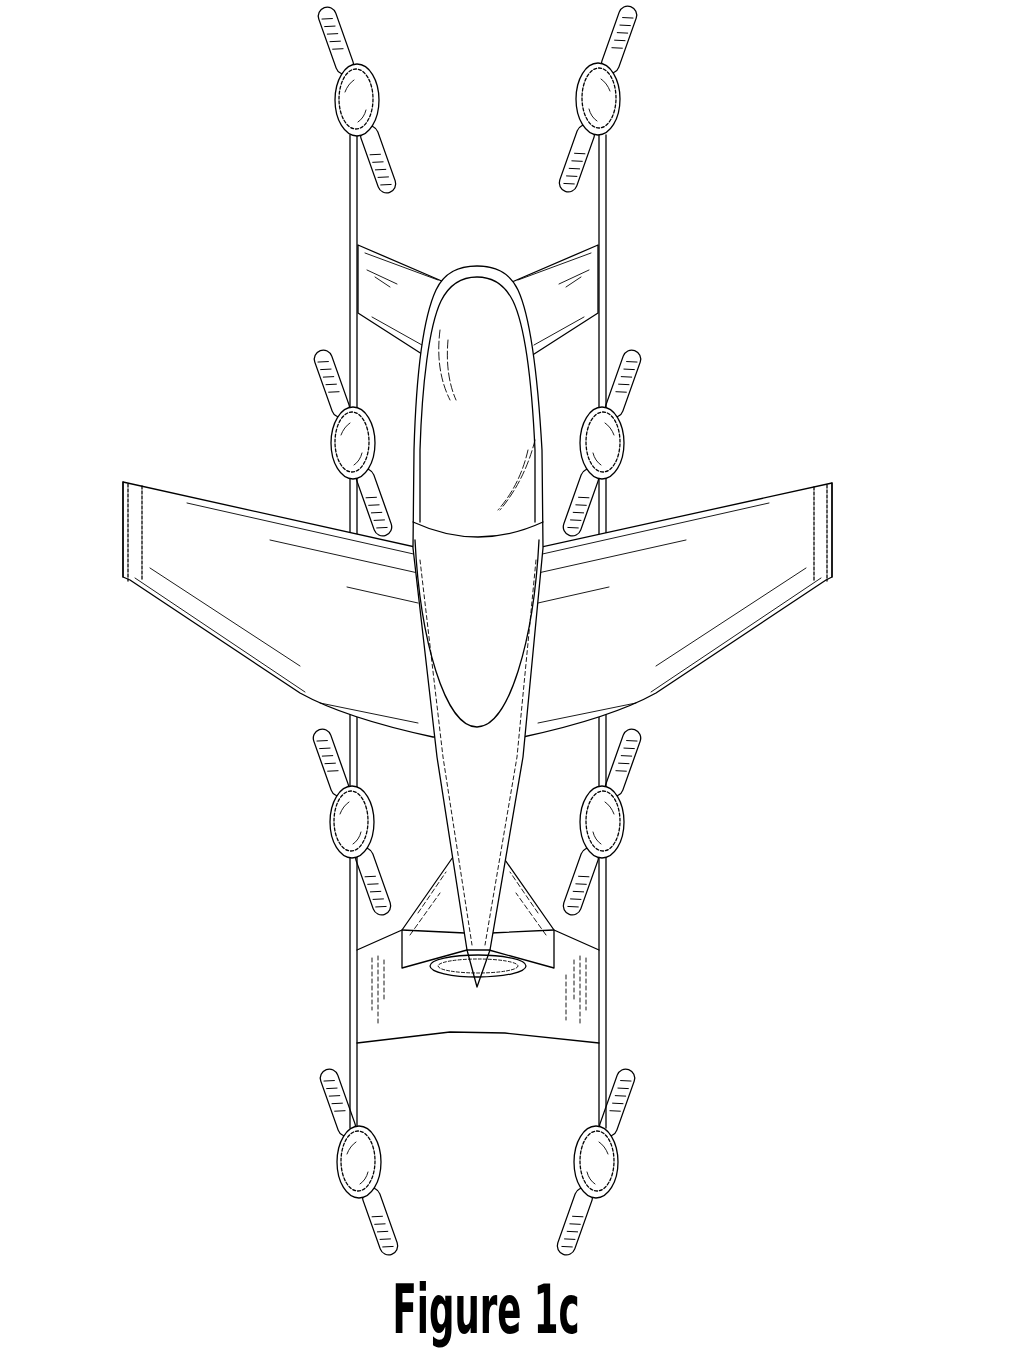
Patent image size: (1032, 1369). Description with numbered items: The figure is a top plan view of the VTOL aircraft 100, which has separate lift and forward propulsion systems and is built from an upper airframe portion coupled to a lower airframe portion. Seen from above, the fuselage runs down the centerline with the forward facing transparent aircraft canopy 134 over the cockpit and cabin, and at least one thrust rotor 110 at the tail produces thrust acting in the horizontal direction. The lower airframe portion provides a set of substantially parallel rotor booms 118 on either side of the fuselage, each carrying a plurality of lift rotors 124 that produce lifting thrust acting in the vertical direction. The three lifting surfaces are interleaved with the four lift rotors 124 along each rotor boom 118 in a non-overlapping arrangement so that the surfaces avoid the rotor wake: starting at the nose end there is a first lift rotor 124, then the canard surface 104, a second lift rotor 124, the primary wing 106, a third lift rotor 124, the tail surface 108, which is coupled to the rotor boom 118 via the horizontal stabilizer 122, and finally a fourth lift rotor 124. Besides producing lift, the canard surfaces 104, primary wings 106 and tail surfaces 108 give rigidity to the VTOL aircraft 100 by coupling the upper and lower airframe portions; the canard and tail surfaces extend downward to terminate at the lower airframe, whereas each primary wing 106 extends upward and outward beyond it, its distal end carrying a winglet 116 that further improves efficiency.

The VTOL aircraft 100 is at (58, 178).
The canard surface 104 is at (418, 262).
The primary wing 106 is at (203, 497).
The tail surface 108 is at (428, 886).
The thrust rotor 110 is at (429, 982).
The winglet 116 is at (118, 524).
The rotor boom 118 is at (348, 191).
The horizontal stabilizer 122 is at (528, 1044).
The lift rotor 124 is at (477, 628).
The aircraft canopy 134 is at (527, 433).